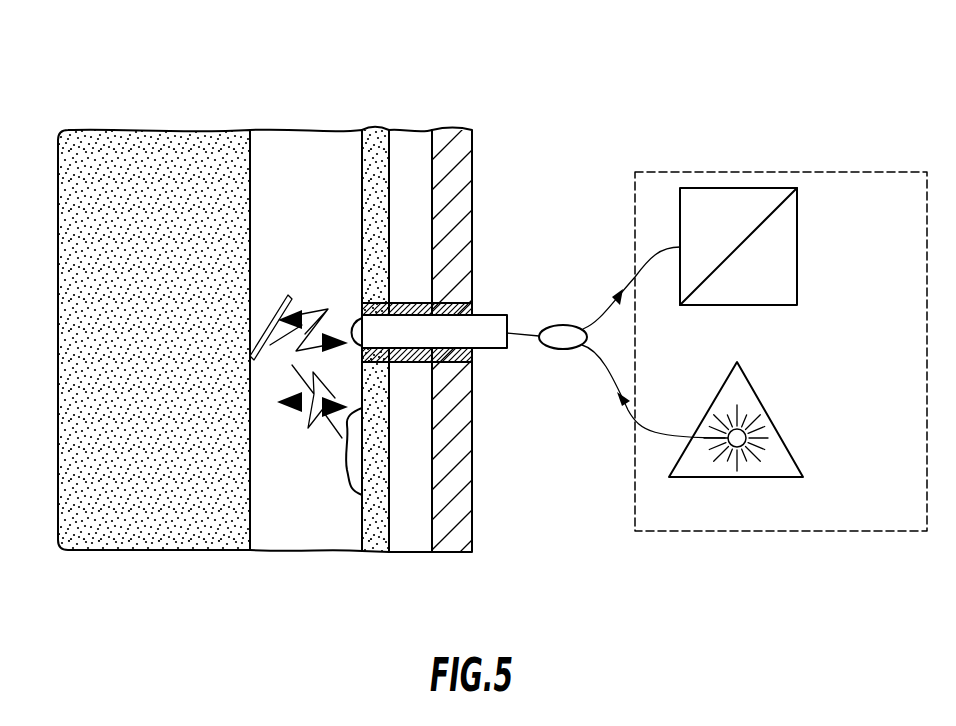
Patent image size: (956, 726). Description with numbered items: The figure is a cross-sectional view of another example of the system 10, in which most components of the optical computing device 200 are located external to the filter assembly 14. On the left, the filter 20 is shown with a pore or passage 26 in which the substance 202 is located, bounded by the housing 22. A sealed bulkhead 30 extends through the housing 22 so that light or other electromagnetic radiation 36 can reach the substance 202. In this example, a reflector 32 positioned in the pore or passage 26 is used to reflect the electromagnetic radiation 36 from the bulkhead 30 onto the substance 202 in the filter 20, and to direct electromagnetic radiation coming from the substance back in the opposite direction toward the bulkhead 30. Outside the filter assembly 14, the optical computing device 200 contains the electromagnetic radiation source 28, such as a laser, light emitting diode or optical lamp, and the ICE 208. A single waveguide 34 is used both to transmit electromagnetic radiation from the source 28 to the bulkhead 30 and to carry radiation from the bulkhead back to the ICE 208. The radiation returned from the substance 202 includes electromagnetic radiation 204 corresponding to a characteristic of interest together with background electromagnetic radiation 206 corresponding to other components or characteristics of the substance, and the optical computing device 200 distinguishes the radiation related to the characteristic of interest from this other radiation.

The system 10 is at (823, 141).
The filter assembly 14 is at (512, 571).
The filter 20 is at (58, 522).
The housing 22 is at (473, 153).
The pore or passage 26 is at (305, 160).
The electromagnetic radiation source 28 is at (762, 403).
The sealed bulkhead 30 is at (477, 354).
The reflector 32 is at (275, 297).
The single waveguide 34 is at (523, 332).
The electromagnetic radiation 36 is at (628, 410).
The optical computing device 200 is at (815, 532).
The substance 202 is at (342, 477).
The electromagnetic radiation corresponding to a characteristic of interest 204 is at (596, 259).
The background electromagnetic radiation 206 is at (633, 277).
The ICE 208 is at (797, 217).